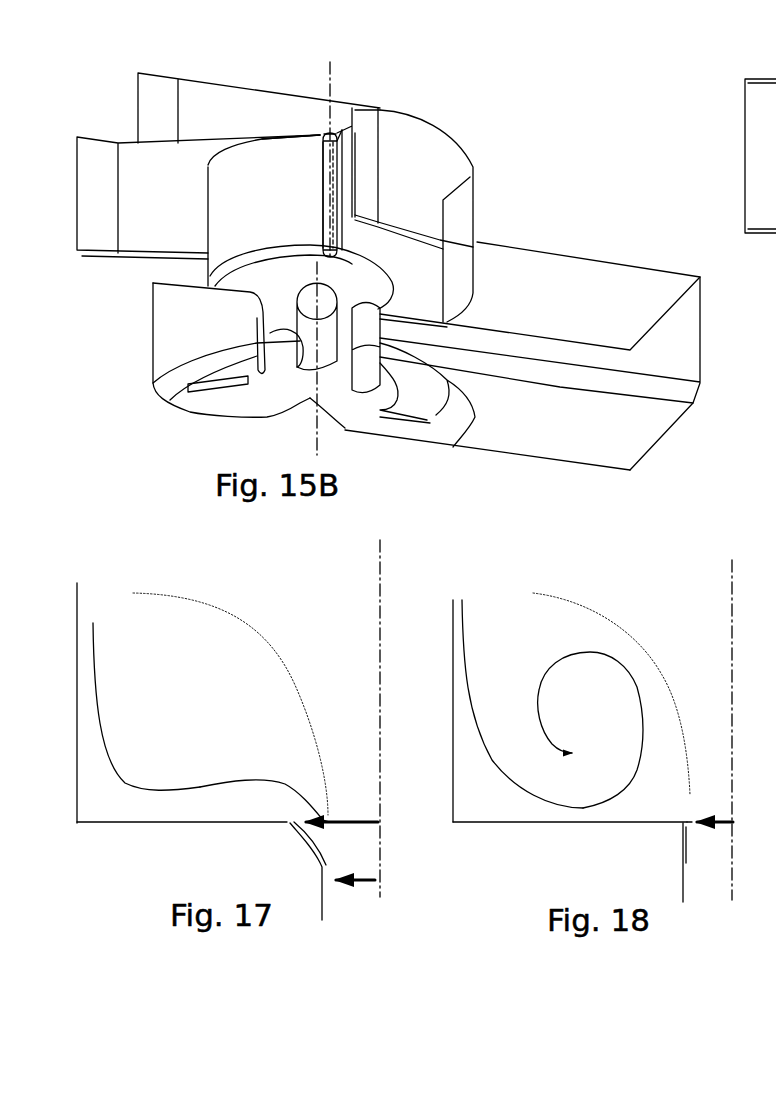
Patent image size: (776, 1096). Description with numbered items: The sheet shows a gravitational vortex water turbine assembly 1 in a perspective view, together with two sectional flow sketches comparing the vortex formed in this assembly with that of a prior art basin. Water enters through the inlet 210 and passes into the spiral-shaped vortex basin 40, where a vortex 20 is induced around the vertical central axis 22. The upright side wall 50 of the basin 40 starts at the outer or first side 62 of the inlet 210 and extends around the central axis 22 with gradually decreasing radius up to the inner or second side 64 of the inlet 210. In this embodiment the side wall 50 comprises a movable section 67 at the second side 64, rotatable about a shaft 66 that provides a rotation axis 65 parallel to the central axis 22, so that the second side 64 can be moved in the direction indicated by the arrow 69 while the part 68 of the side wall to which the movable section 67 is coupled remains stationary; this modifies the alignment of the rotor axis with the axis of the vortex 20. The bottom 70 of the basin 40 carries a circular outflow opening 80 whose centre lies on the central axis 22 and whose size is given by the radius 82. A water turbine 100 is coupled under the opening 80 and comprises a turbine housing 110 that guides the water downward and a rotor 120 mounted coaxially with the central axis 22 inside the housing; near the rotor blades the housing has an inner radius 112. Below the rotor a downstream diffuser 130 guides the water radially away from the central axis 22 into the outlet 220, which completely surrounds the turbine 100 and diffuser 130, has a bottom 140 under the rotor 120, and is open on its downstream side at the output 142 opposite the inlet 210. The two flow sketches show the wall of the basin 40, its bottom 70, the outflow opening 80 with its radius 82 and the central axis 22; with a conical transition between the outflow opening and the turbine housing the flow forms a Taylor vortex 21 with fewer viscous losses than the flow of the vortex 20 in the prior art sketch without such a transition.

In FIG. 15B, the gravitational vortex water turbine assembly 1 is at (576, 152).
In FIG. 17, the vortex 20 is at (237, 619).
In FIG. 18, the vortex 20 is at (642, 658).
In FIG. 17, the Taylor vortex 21 is at (220, 780).
In FIG. 18, the Taylor vortex 21 is at (628, 792).
In FIG. 15B, the central axis 22 is at (318, 441).
In FIG. 17, the central axis 22 is at (380, 898).
In FIG. 18, the central axis 22 is at (732, 900).
In FIG. 15B, the spiral-shaped vortex basin 40 is at (489, 217).
In FIG. 17, the spiral-shaped vortex basin 40 is at (83, 682).
In FIG. 18, the spiral-shaped vortex basin 40 is at (461, 660).
In FIG. 15B, the upright side wall 50 is at (448, 144).
In FIG. 15B, the first side of the inlet 62 is at (376, 110).
In FIG. 15B, the second side of the inlet 64 is at (346, 130).
In FIG. 15B, the rotation axis 65 is at (330, 93).
In FIG. 15B, the shaft 66 is at (322, 221).
In FIG. 15B, the movable section 67 is at (347, 182).
In FIG. 15B, the stationary part of the side wall 68 is at (272, 136).
In FIG. 15B, the arrow 69 is at (349, 128).
In FIG. 15B, the bottom of the basin 70 is at (424, 254).
In FIG. 17, the bottom of the basin 70 is at (162, 808).
In FIG. 18, the bottom of the basin 70 is at (537, 814).
In FIG. 15B, the outflow opening 80 is at (374, 266).
In FIG. 17, the outflow opening 80 is at (355, 808).
In FIG. 18, the outflow opening 80 is at (715, 809).
In FIG. 15B, the radius of the outflow opening 82 is at (312, 289).
In FIG. 17, the radius of the outflow opening 82 is at (342, 835).
In FIG. 18, the radius of the outflow opening 82 is at (708, 862).
In FIG. 15B, the water turbine 100 is at (249, 330).
In FIG. 15B, the turbine housing 110 is at (280, 347).
In FIG. 17, the inner radius of the turbine housing 112 is at (338, 870).
In FIG. 15B, the turbine rotor 120 is at (357, 298).
In FIG. 15B, the downstream diffuser 130 is at (451, 416).
In FIG. 15B, the bottom of the outlet 140 is at (472, 455).
In FIG. 15B, the output 142 is at (673, 355).
In FIG. 15B, the inlet 210 is at (210, 96).
In FIG. 15B, the outlet 220 is at (601, 292).